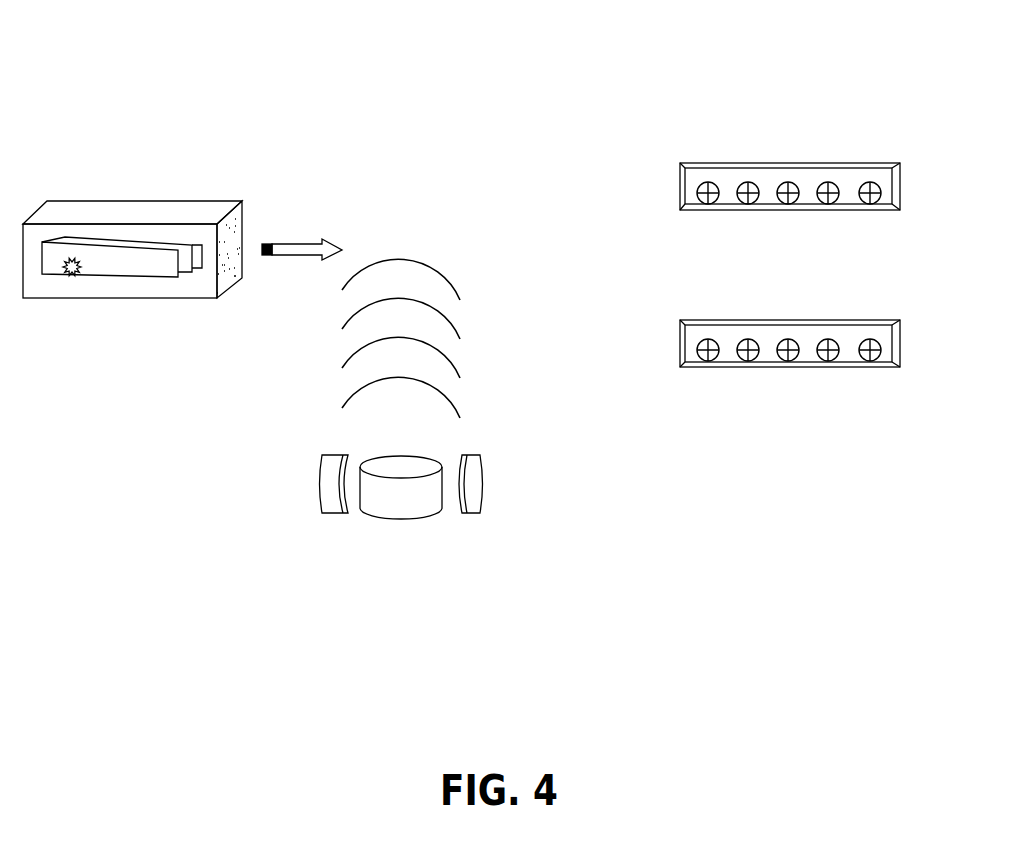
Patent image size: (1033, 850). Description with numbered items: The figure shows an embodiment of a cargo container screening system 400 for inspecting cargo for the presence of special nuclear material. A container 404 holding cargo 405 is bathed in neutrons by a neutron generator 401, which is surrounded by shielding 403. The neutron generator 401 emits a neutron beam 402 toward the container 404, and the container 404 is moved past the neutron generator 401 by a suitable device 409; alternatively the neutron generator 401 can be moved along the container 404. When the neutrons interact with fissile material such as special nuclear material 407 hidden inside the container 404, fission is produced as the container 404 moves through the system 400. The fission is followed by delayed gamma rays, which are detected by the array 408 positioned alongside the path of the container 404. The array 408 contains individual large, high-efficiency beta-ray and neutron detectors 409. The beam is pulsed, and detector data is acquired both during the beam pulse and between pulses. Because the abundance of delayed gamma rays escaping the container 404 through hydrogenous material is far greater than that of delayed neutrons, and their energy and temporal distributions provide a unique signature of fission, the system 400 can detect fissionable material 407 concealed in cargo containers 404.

The cargo container screening system 400 is at (112, 58).
The neutron generator 401 is at (402, 493).
The neutron beam 402 is at (329, 345).
The shielding 403 is at (318, 473).
The container 404 is at (122, 220).
The cargo 405 is at (160, 260).
The special nuclear material 407 is at (73, 277).
The array 408 is at (678, 181).
The detectors / suitable device 409 is at (302, 258).